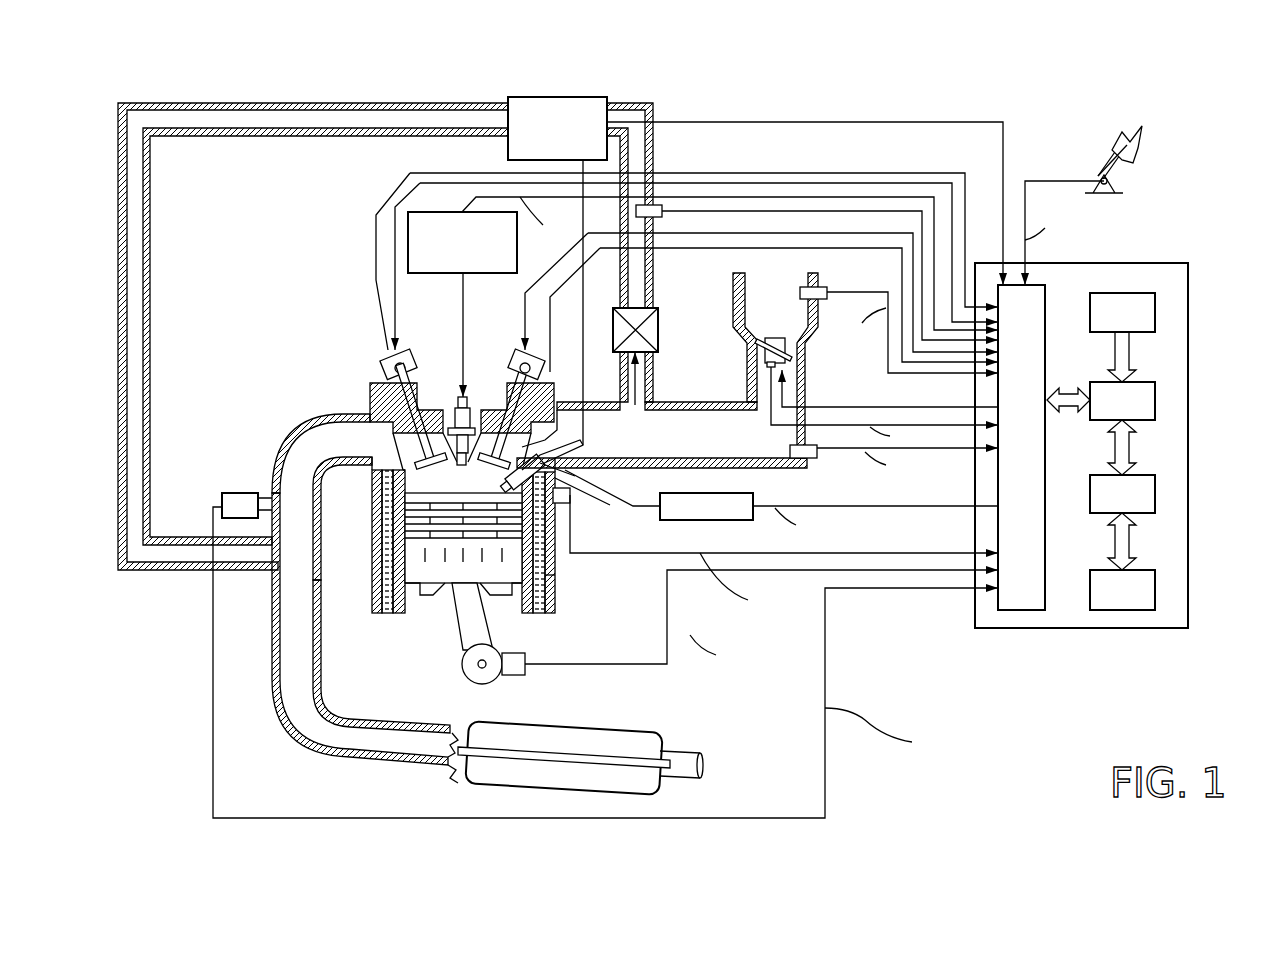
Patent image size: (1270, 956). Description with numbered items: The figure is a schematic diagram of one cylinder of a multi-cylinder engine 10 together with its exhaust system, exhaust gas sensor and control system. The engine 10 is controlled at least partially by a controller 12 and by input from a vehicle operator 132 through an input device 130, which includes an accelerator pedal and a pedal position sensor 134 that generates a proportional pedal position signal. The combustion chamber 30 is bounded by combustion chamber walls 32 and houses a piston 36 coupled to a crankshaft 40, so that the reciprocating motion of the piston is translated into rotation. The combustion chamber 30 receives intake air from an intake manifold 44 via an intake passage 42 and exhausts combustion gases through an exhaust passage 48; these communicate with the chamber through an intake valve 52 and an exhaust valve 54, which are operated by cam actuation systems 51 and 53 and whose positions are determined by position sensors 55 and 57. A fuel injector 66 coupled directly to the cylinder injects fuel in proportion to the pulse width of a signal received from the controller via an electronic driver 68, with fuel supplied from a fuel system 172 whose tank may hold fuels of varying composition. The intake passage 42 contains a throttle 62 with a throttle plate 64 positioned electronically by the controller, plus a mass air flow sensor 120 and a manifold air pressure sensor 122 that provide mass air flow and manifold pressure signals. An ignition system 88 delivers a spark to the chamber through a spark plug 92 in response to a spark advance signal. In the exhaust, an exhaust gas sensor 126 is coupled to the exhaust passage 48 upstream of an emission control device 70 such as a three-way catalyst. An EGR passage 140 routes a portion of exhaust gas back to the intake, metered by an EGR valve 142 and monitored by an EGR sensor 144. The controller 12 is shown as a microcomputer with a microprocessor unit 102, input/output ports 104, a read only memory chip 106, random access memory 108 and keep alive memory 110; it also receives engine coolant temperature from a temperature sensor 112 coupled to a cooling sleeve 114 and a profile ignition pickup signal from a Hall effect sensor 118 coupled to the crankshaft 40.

The engine 10 is at (305, 338).
The controller 12 is at (1180, 263).
The combustion chamber 30 is at (382, 576).
The combustion chamber walls 32 is at (410, 612).
The piston 36 is at (445, 565).
The crankshaft 40 is at (470, 684).
The intake passage 42 is at (785, 314).
The intake manifold 44 is at (725, 447).
The exhaust passage 48 is at (346, 450).
The cam actuation system 51 is at (518, 358).
The intake valve 52 is at (515, 447).
The cam actuation system 53 is at (405, 355).
The exhaust valve 54 is at (383, 430).
The position sensor 55 is at (540, 376).
The position sensor 57 is at (386, 372).
The throttle 62 is at (790, 352).
The throttle plate 64 is at (755, 346).
The fuel injector 66 is at (575, 482).
The electronic driver 68 is at (680, 520).
The emission control device 70 is at (628, 724).
The ignition system 88 is at (418, 212).
The spark plug 92 is at (472, 395).
The microprocessor unit 102 is at (1155, 395).
The input/output ports 104 is at (1047, 293).
The read only memory chip 106 is at (1155, 312).
The random access memory 108 is at (1155, 490).
The keep alive memory 110 is at (1155, 585).
The temperature sensor 112 is at (565, 505).
The cooling sleeve 114 is at (548, 580).
The Hall effect sensor 118 is at (520, 680).
The mass air flow sensor 120 is at (827, 289).
The manifold air pressure sensor 122 is at (815, 460).
The exhaust gas sensor 126 is at (220, 498).
The input device 130 is at (1090, 160).
The vehicle operator 132 is at (1135, 140).
The pedal position sensor 134 is at (1118, 182).
The EGR passage 140 is at (385, 103).
The EGR valve 142 is at (658, 322).
The EGR sensor 144 is at (653, 217).
The fuel system 172 is at (566, 97).